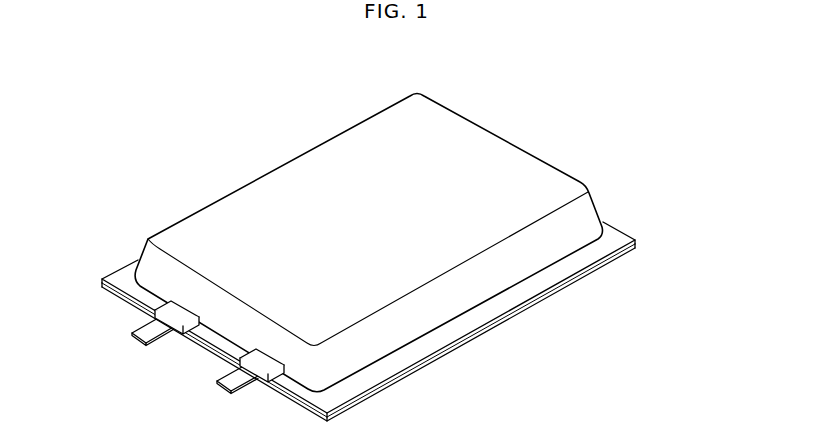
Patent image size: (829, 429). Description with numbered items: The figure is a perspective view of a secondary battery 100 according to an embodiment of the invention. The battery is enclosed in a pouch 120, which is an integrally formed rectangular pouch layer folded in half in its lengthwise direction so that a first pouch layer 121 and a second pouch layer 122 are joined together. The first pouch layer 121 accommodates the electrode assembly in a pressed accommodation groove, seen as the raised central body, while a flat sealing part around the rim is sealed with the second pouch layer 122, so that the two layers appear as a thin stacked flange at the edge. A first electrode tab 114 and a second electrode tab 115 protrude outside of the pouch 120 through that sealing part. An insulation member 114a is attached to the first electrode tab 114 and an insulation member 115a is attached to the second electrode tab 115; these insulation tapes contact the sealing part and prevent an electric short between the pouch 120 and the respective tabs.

The secondary battery 100 is at (627, 58).
The first electrode tab 114 is at (222, 388).
The insulation member 114a is at (239, 366).
The second electrode tab 115 is at (138, 341).
The insulation member 115a is at (154, 318).
The pouch 120 is at (692, 222).
The first pouch layer 121 is at (613, 245).
The second pouch layer 122 is at (613, 247).